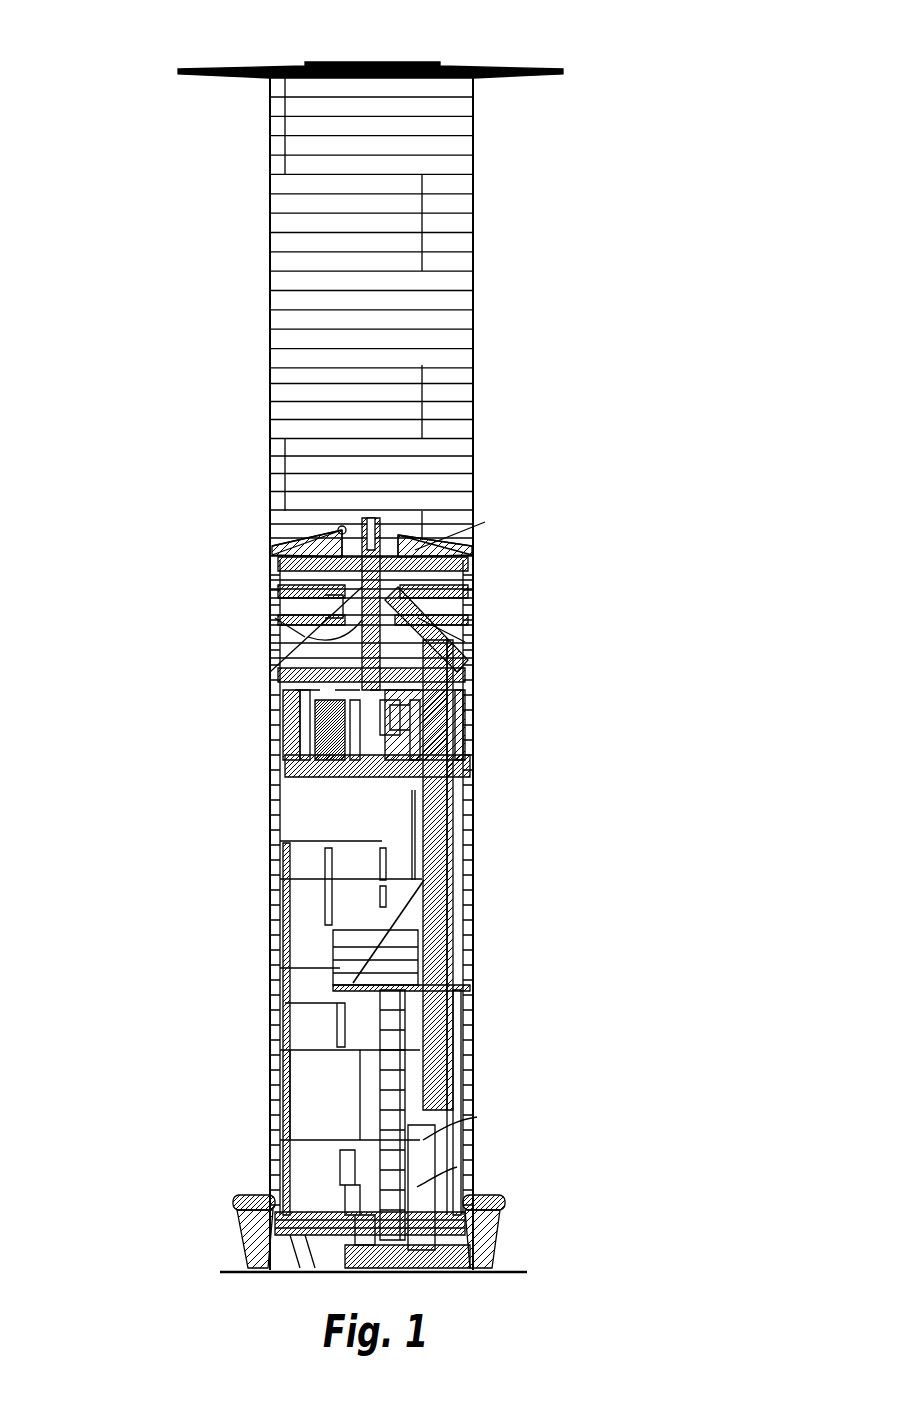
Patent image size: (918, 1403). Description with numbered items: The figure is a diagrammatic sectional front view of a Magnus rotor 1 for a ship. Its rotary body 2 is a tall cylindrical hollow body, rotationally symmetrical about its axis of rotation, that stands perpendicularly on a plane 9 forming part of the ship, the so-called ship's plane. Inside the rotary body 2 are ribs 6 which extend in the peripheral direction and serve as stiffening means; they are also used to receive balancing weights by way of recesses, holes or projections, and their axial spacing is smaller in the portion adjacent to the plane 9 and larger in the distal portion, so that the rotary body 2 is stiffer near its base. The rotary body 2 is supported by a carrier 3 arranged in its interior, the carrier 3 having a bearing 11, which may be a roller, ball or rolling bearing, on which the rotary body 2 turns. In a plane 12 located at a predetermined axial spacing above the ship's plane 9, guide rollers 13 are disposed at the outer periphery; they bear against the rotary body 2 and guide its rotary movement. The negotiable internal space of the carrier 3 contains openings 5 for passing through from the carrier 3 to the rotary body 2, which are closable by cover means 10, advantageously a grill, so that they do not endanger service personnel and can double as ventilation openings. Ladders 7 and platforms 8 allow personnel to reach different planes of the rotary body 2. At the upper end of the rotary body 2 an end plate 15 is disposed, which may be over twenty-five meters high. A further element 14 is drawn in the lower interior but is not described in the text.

The Magnus rotor 1 is at (117, 105).
The rotary body 2 is at (270, 365).
The carrier 3 is at (325, 808).
The openings 5 is at (373, 1013).
The ribs 6 is at (455, 453).
The ladders 7 is at (408, 1110).
The platforms 8 is at (447, 860).
The plane 9 is at (517, 1277).
The cover means 10 is at (367, 1097).
The bearing 11 is at (270, 540).
The plane 12 is at (465, 1197).
The guide rollers 13 is at (250, 1193).
The drive unit 14 is at (303, 733).
The end plate 15 is at (487, 78).